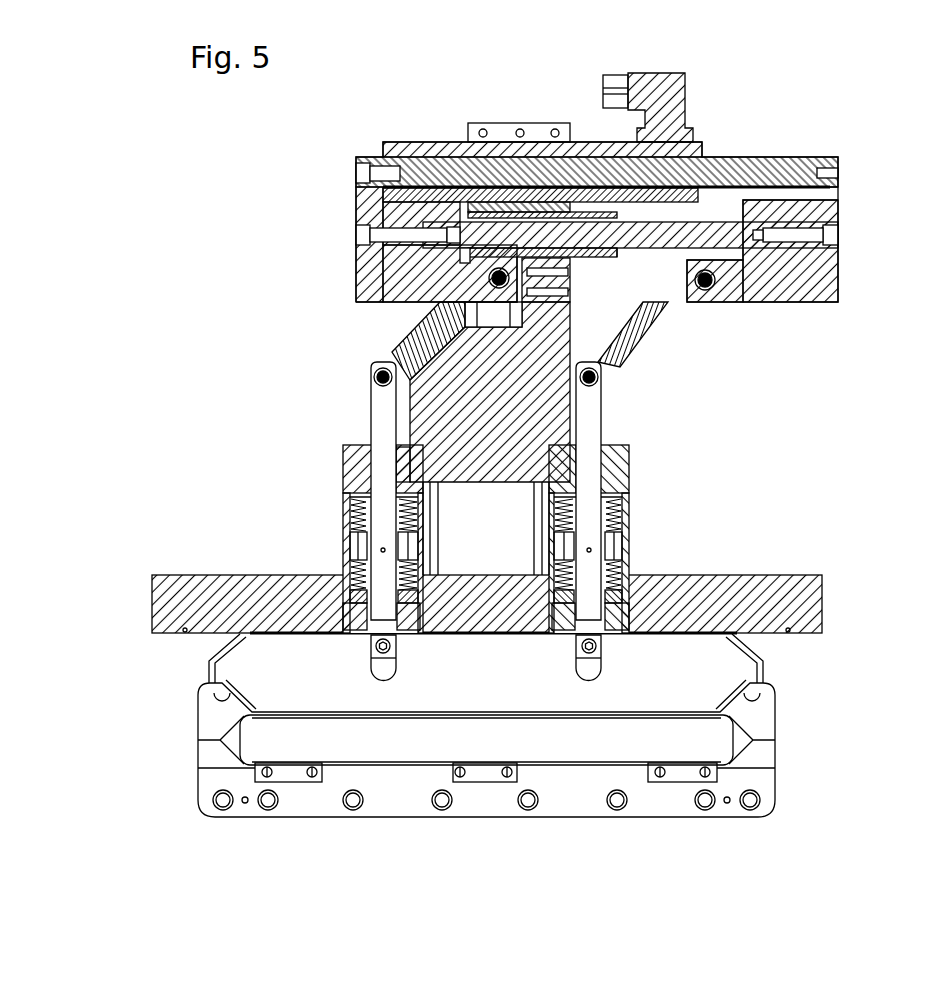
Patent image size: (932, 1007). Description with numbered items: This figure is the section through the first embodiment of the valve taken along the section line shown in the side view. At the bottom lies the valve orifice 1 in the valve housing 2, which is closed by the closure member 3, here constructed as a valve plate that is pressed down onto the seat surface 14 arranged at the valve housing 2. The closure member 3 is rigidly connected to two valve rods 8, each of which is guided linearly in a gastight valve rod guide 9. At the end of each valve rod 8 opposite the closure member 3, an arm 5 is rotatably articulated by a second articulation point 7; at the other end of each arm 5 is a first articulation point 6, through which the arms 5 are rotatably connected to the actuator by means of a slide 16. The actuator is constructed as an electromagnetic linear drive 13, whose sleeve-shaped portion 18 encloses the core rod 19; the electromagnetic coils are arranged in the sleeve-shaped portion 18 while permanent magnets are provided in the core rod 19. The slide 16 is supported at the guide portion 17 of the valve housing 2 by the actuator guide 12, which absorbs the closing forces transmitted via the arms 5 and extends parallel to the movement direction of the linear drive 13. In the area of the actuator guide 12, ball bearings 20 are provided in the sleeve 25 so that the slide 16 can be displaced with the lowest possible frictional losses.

The valve orifice 1 is at (713, 737).
The valve housing 2 is at (747, 617).
The closure member 3 is at (257, 672).
The arm 5 is at (430, 333).
The first articulation point 6 is at (491, 276).
The second articulation point 7 is at (378, 372).
The valve rod 8 is at (382, 413).
The valve rod guide 9 is at (354, 538).
The actuator guide 12 is at (575, 209).
The electromagnetic linear drive 13 is at (664, 147).
The seat surface 14 is at (378, 767).
The slide 16 is at (363, 203).
The guide portion 17 is at (437, 428).
The sleeve-shaped portion 18 is at (431, 152).
The core rod 19 is at (613, 209).
The ball bearings 20 is at (580, 257).
The sleeve 25 is at (612, 322).